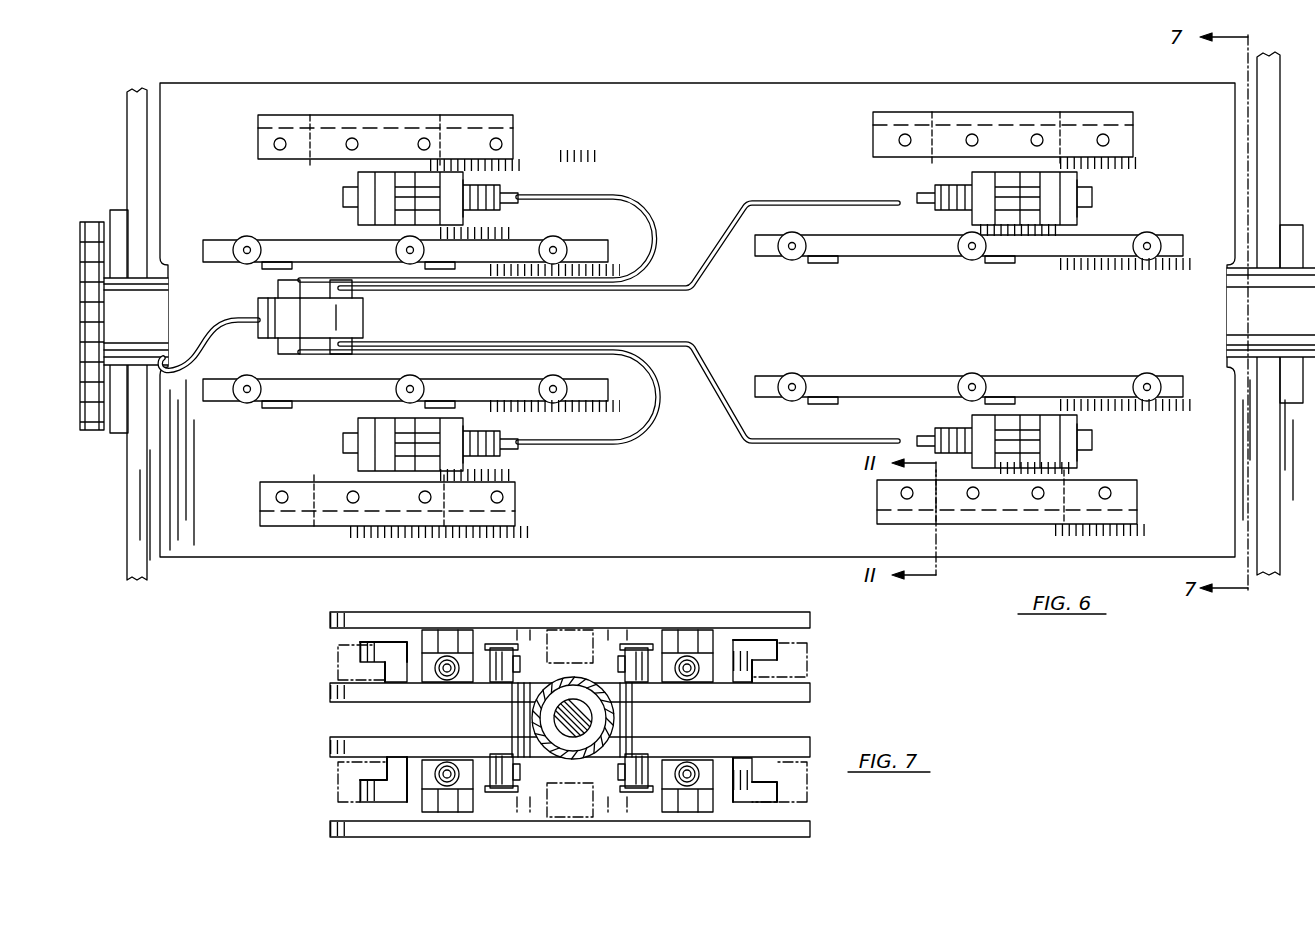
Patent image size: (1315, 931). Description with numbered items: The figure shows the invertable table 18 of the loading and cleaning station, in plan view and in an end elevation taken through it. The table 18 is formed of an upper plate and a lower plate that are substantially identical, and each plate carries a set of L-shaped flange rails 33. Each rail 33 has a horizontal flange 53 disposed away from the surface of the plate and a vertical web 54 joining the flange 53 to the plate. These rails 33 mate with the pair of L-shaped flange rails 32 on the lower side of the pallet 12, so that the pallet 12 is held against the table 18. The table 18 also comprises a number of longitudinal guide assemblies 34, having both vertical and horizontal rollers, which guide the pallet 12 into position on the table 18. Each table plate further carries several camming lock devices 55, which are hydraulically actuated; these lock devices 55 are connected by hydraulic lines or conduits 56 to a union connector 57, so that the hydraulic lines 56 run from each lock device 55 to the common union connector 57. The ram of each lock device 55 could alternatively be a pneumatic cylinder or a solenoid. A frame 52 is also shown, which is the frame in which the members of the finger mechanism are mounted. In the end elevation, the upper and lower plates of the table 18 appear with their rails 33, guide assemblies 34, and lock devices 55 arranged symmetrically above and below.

In FIG. 7, the pallet 12 is at (572, 612).
In FIG. 7, the table 18 is at (544, 724).
In FIG. 7, the L-shaped flange rails 32 is at (338, 652).
In FIG. 6, the L-shaped flange rails 33 is at (515, 130).
In FIG. 7, the L-shaped flange rails 33 is at (775, 642).
In FIG. 6, the longitudinal guide assemblies 34 is at (273, 243).
In FIG. 7, the longitudinal guide assemblies 34 is at (500, 660).
In FIG. 6, the frame 52 is at (358, 212).
In FIG. 6, the horizontal flange 53 is at (1135, 120).
In FIG. 7, the horizontal flange 53 is at (385, 645).
In FIG. 6, the vertical web 54 is at (1133, 150).
In FIG. 7, the vertical web 54 is at (393, 683).
In FIG. 6, the camming lock devices 55 is at (478, 218).
In FIG. 7, the camming lock devices 55 is at (465, 630).
In FIG. 6, the hydraulic lines 56 is at (655, 352).
In FIG. 6, the union connector 57 is at (362, 312).